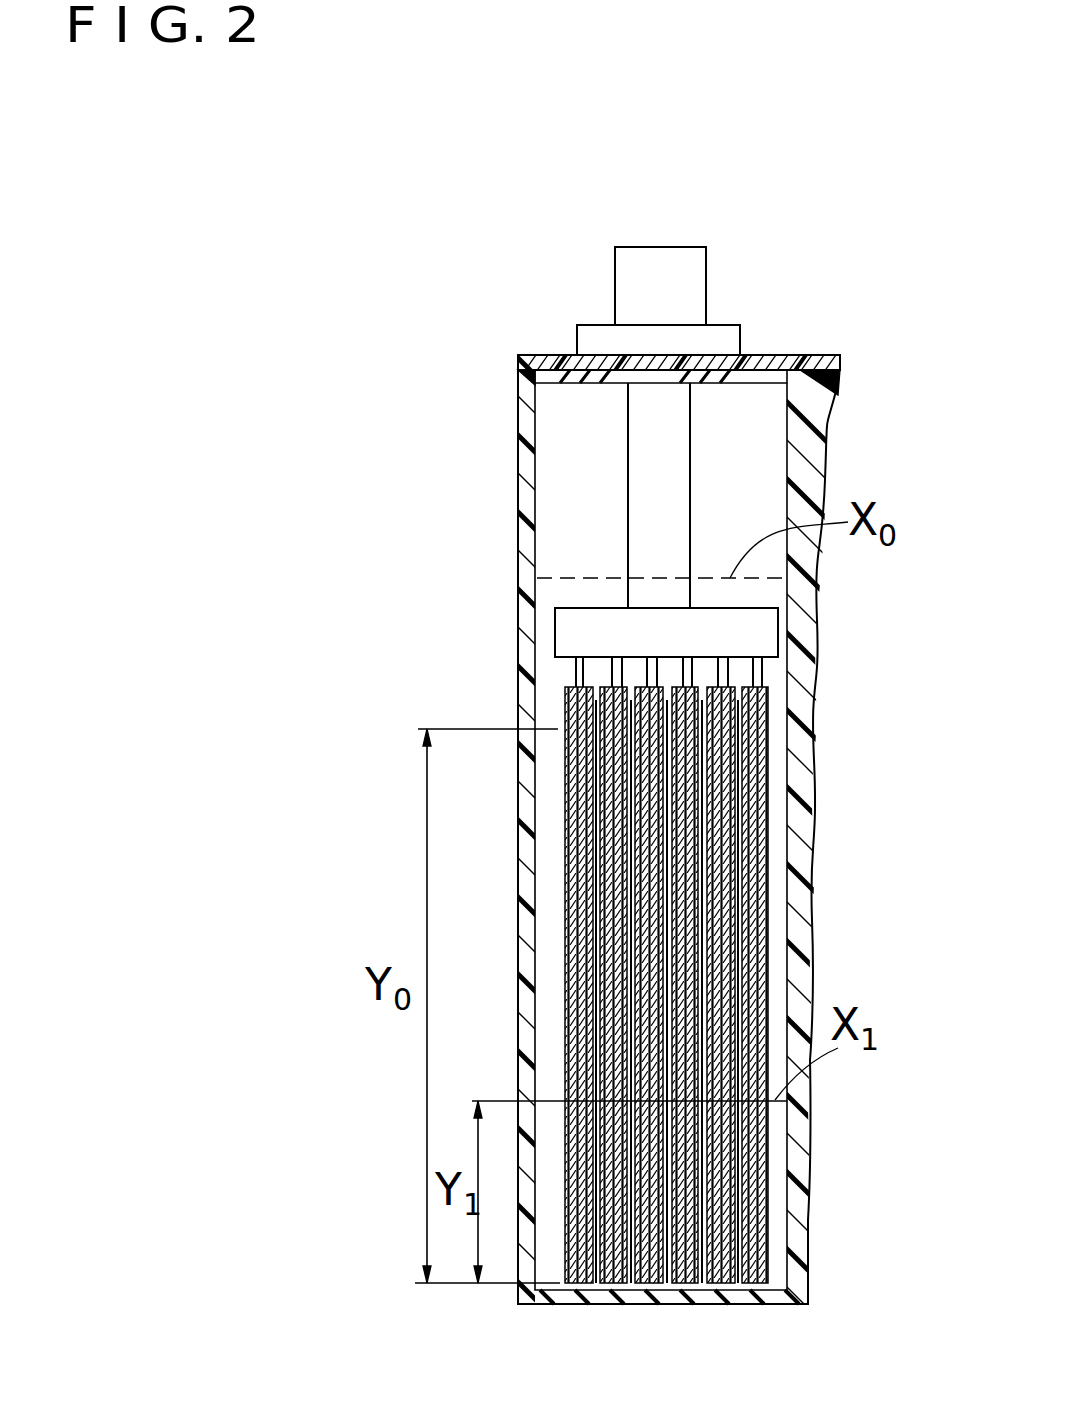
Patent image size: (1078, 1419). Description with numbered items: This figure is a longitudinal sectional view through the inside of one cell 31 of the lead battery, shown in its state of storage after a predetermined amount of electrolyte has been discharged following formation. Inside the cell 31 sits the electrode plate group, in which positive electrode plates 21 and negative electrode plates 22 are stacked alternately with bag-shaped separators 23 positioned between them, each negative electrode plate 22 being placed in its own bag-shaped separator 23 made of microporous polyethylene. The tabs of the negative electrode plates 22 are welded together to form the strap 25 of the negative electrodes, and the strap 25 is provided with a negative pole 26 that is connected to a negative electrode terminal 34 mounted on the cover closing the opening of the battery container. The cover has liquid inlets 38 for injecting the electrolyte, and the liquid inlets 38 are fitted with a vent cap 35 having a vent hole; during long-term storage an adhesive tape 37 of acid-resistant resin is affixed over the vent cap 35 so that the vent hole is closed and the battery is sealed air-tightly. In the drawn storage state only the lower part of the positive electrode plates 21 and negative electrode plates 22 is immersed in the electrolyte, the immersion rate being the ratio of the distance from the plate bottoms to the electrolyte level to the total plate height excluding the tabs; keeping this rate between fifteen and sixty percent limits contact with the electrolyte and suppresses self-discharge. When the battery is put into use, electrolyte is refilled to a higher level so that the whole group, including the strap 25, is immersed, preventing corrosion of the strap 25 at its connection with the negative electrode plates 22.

The positive electrode plates 21 is at (767, 758).
The negative electrode plates 22 is at (767, 818).
The bag-shaped separators 23 is at (767, 865).
The strap of the negative electrodes 25 is at (755, 633).
The negative pole 26 is at (655, 490).
The cell 31 is at (562, 428).
The negative electrode terminal 34 is at (650, 262).
The vent cap 35 is at (688, 378).
The adhesive tape 37 is at (548, 368).
The liquid inlets 38 is at (735, 378).